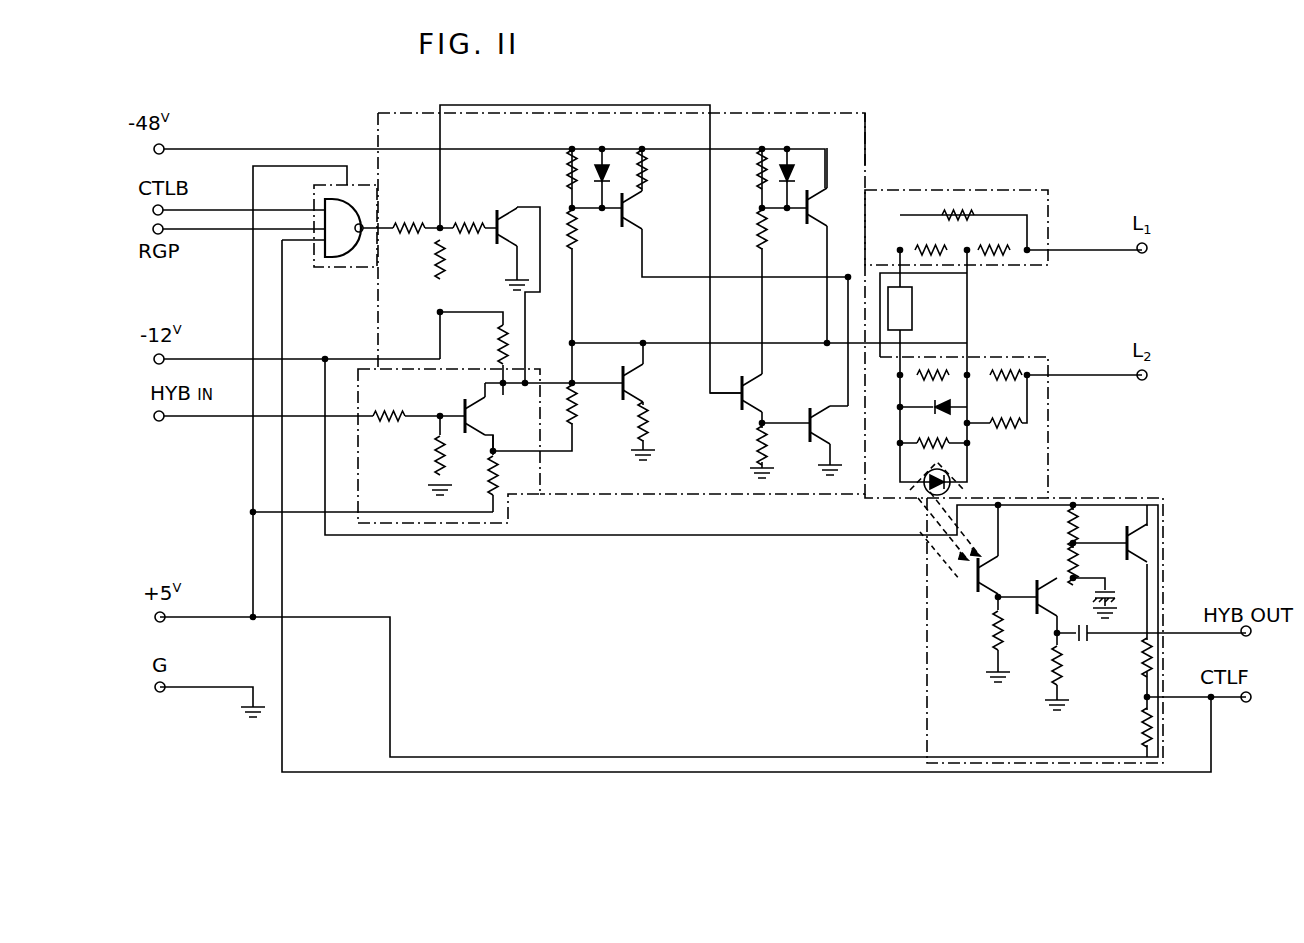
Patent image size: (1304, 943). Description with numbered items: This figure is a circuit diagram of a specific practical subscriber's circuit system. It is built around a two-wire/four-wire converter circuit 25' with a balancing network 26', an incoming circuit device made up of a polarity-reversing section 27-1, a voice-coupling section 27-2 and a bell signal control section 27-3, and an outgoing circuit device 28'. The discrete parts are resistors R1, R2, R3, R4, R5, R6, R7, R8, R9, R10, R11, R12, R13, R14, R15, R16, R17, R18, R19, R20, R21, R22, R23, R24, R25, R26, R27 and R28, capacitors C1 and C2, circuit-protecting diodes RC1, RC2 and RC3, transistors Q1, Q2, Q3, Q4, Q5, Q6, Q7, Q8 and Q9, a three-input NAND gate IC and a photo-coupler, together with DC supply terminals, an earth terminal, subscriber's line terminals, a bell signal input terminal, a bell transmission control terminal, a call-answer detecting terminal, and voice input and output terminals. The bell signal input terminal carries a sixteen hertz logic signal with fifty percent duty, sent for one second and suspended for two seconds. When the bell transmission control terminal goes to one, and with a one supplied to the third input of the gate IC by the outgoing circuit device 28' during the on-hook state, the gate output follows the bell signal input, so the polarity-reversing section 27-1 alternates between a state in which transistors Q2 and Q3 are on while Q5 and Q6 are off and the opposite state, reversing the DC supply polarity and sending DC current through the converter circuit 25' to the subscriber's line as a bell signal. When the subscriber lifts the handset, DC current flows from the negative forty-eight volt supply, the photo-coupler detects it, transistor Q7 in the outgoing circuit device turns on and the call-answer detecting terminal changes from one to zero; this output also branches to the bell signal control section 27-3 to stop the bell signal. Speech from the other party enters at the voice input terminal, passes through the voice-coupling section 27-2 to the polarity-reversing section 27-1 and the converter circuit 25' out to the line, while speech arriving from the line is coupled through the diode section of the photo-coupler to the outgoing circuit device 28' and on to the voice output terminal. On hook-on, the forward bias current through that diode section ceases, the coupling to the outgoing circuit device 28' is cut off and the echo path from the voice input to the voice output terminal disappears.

The three-input NAND gate IC is at (343, 205).
The resistor R1 is at (407, 226).
The resistor R2 is at (468, 233).
The resistor R3 is at (445, 270).
The resistor R4 is at (500, 336).
The resistor R5 is at (570, 170).
The resistor R6 is at (580, 234).
The resistor R7 is at (651, 166).
The resistor R8 is at (756, 172).
The resistor R9 is at (756, 236).
The resistor R10 is at (580, 410).
The resistor R11 is at (655, 418).
The resistor R12 is at (755, 446).
The resistor R13 is at (392, 412).
The resistor R14 is at (435, 438).
The resistor R15 is at (488, 460).
The resistor R16 is at (988, 635).
The resistor R17 is at (1082, 520).
The resistor R18 is at (1082, 555).
The resistor R19 is at (1048, 670).
The resistor R20 is at (1139, 654).
The resistor R21 is at (1139, 719).
The resistor R22 is at (971, 211).
The resistor R23 is at (935, 250).
The resistor R24 is at (996, 250).
The resistor R25 is at (930, 372).
The resistor R26 is at (1009, 370).
The resistor R27 is at (1007, 428).
The resistor R28 is at (924, 448).
The transistor Q1 is at (502, 220).
The transistor Q2 is at (643, 210).
The transistor Q3 is at (643, 393).
The transistor Q4 is at (763, 390).
The transistor Q5 is at (823, 206).
The transistor Q6 is at (828, 426).
The transistor Q7 is at (482, 409).
The transistor Q8 is at (1046, 588).
The transistor Q9 is at (1142, 546).
The circuit-protecting diode RC1 is at (612, 166).
The circuit-protecting diode RC2 is at (796, 166).
The circuit-protecting diode RC3 is at (973, 399).
The capacitor C1 is at (1110, 602).
The capacitor C2 is at (1080, 624).
The two-wire/four-wire converter circuit 25' is at (990, 174).
The balancing network 26' is at (923, 308).
The polarity-reversing section 27-1 is at (866, 132).
The voice-coupling section 27-2 is at (442, 557).
The bell signal control section 27-3 is at (372, 270).
The outgoing circuit device 28' is at (900, 621).